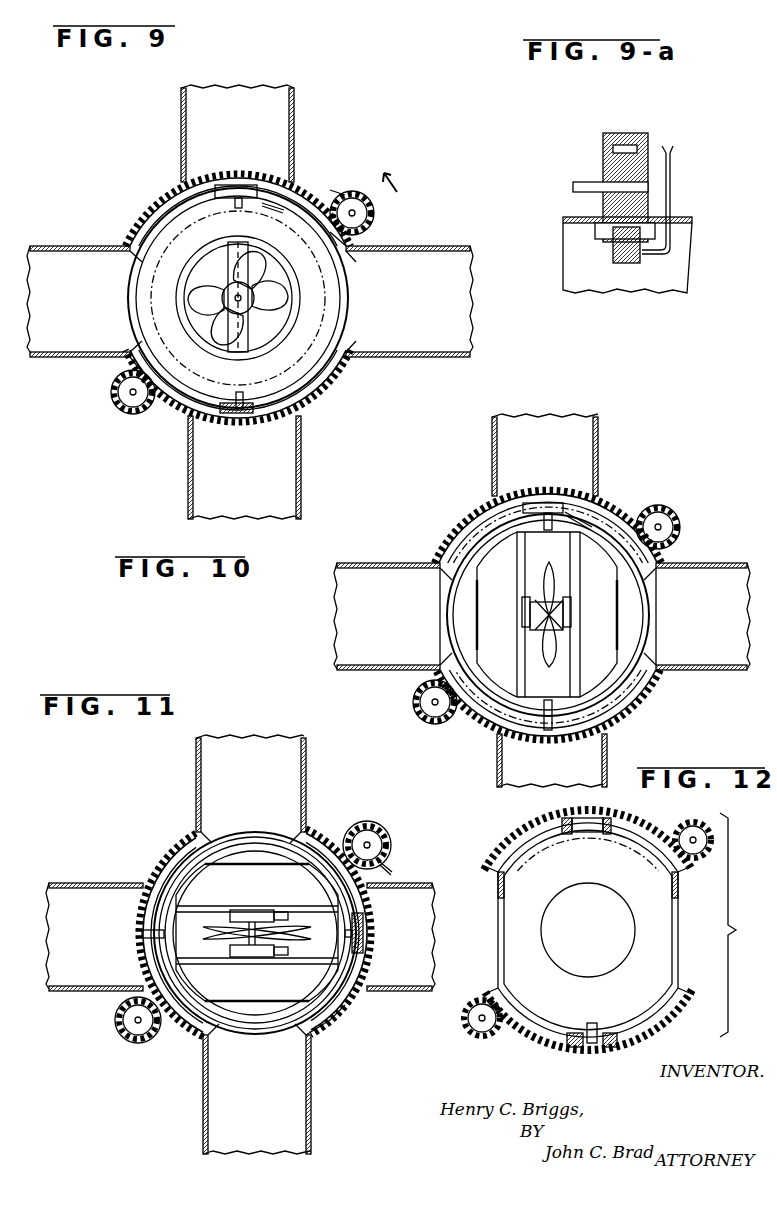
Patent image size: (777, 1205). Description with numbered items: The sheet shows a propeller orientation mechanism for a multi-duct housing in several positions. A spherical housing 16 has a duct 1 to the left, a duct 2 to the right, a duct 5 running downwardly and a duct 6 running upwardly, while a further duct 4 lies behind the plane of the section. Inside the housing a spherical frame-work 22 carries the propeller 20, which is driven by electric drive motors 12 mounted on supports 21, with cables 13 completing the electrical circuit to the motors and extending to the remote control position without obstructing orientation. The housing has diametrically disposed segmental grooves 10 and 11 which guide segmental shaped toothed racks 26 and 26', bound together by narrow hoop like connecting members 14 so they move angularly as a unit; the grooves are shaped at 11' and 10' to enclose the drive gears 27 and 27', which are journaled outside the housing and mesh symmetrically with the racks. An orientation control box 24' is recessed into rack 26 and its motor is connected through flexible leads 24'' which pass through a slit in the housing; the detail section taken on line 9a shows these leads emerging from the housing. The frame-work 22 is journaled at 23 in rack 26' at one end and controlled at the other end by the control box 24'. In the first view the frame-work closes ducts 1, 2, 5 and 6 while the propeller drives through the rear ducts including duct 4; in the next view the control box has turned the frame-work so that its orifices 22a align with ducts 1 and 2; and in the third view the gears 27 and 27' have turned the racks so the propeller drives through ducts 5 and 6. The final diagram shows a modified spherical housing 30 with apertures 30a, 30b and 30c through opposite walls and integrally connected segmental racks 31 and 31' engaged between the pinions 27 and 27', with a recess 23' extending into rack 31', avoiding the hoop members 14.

In FIG. 9, the duct 1 is at (58, 350).
In FIG. 10, the duct 1 is at (365, 590).
In FIG. 11, the duct 1 is at (78, 980).
In FIG. 9, the duct 2 is at (428, 345).
In FIG. 10, the duct 2 is at (708, 588).
In FIG. 11, the duct 2 is at (405, 985).
In FIG. 9, the duct 4 is at (362, 352).
In FIG. 9, the duct 5 is at (278, 492).
In FIG. 10, the duct 5 is at (600, 754).
In FIG. 11, the duct 5 is at (282, 1132).
In FIG. 9, the duct 6 is at (276, 116).
In FIG. 10, the duct 6 is at (578, 452).
In FIG. 11, the duct 6 is at (212, 762).
In FIG. 9, the section line 9a is at (302, 262).
In FIG. 9, the segmental groove 10 is at (256, 264).
In FIG. 9A, the segmental groove 10 is at (605, 217).
In FIG. 10, the segmental groove 10 is at (526, 615).
In FIG. 11, the segmental groove 10 is at (253, 915).
In FIG. 9, the groove enclosure portion 10' is at (390, 213).
In FIG. 9A, the groove enclosure portion 10' is at (612, 174).
In FIG. 10, the groove enclosure portion 10' is at (682, 507).
In FIG. 11, the groove enclosure portion 10' is at (367, 816).
In FIG. 9, the segmental groove 11 is at (290, 327).
In FIG. 10, the segmental groove 11 is at (675, 634).
In FIG. 11, the segmental groove 11 is at (339, 1036).
In FIG. 9, the groove enclosure portion 11' is at (106, 402).
In FIG. 10, the groove enclosure portion 11' is at (403, 702).
In FIG. 11, the groove enclosure portion 11' is at (104, 1038).
In FIG. 9, the electric drive motor 12 is at (232, 395).
In FIG. 10, the electric drive motor 12 is at (532, 612).
In FIG. 11, the electric drive motor 12 is at (250, 912).
In FIG. 10, the cable 13 is at (525, 605).
In FIG. 11, the cable 13 is at (282, 914).
In FIG. 9, the hoop like connecting member 14 is at (130, 312).
In FIG. 10, the hoop like connecting member 14 is at (440, 598).
In FIG. 11, the hoop like connecting member 14 is at (248, 830).
In FIG. 9, the spherical housing 16 is at (142, 266).
In FIG. 9A, the spherical housing 16 is at (684, 224).
In FIG. 10, the spherical housing 16 is at (470, 522).
In FIG. 11, the spherical housing 16 is at (312, 830).
In FIG. 9, the propeller 20 is at (168, 340).
In FIG. 10, the propeller 20 is at (549, 575).
In FIG. 11, the propeller 20 is at (290, 934).
In FIG. 9, the support 21 is at (325, 290).
In FIG. 10, the support 21 is at (517, 560).
In FIG. 11, the support 21 is at (190, 906).
In FIG. 9, the spherical frame-work 22 is at (168, 280).
In FIG. 10, the spherical frame-work 22 is at (500, 538).
In FIG. 11, the spherical frame-work 22 is at (257, 921).
In FIG. 10, the orifice 22a is at (469, 636).
In FIG. 11, the orifice 22a is at (258, 871).
In FIG. 9, the journal 23 is at (281, 417).
In FIG. 10, the journal 23 is at (610, 718).
In FIG. 11, the journal 23 is at (254, 946).
In FIG. 12, the recess 23' is at (591, 1023).
In FIG. 9, the orientation control box 24' is at (236, 172).
In FIG. 10, the orientation control box 24' is at (543, 484).
In FIG. 11, the orientation control box 24' is at (381, 928).
In FIG. 12, the orientation control box 24' is at (595, 842).
In FIG. 9, the flexible leads 24'' is at (301, 178).
In FIG. 9A, the flexible leads 24'' is at (694, 200).
In FIG. 10, the flexible leads 24'' is at (619, 506).
In FIG. 11, the flexible leads 24'' is at (415, 844).
In FIG. 9, the segmental toothed rack 26 is at (232, 210).
In FIG. 9A, the segmental toothed rack 26 is at (578, 262).
In FIG. 10, the segmental toothed rack 26 is at (547, 512).
In FIG. 11, the segmental toothed rack 26 is at (371, 932).
In FIG. 9, the segmental toothed rack 26' is at (256, 386).
In FIG. 10, the segmental toothed rack 26' is at (548, 722).
In FIG. 11, the segmental toothed rack 26' is at (139, 935).
In FIG. 9, the drive gear 27 is at (376, 185).
In FIG. 9A, the drive gear 27 is at (637, 151).
In FIG. 10, the drive gear 27 is at (684, 523).
In FIG. 11, the drive gear 27 is at (253, 941).
In FIG. 12, the drive gear 27 is at (721, 925).
In FIG. 9, the drive gear 27' is at (121, 421).
In FIG. 10, the drive gear 27' is at (435, 722).
In FIG. 12, the drive gear 27' is at (470, 1031).
In FIG. 12, the spherical housing 30 is at (675, 903).
In FIG. 12, the aperture 30a is at (500, 963).
In FIG. 12, the aperture 30b is at (600, 980).
In FIG. 12, the aperture 30c is at (682, 958).
In FIG. 12, the segmental shaped rack 31 is at (588, 837).
In FIG. 12, the segmental shaped rack 31' is at (588, 1030).